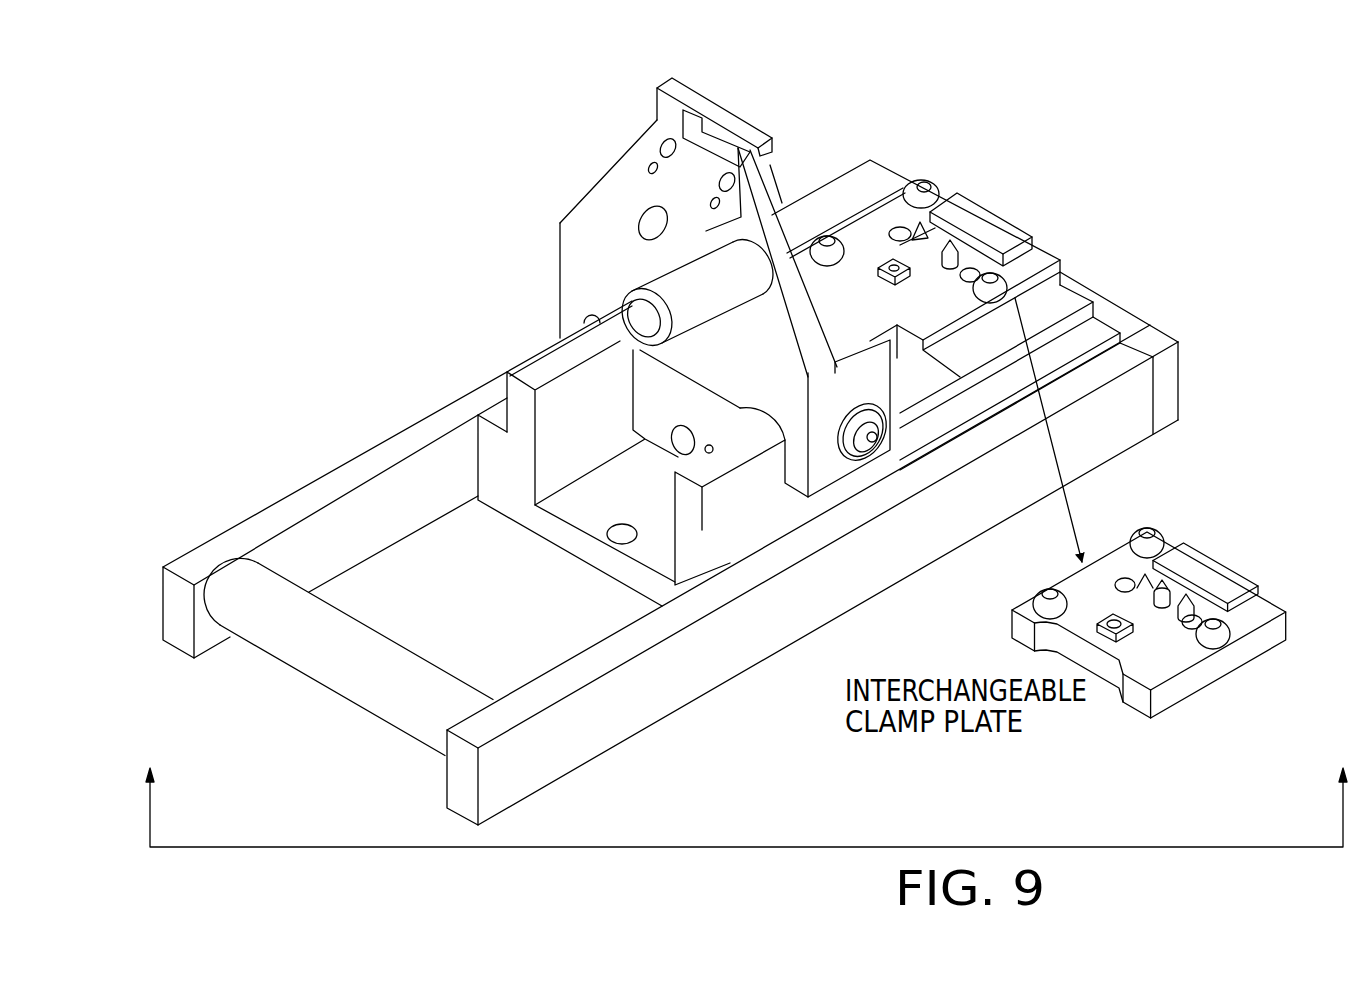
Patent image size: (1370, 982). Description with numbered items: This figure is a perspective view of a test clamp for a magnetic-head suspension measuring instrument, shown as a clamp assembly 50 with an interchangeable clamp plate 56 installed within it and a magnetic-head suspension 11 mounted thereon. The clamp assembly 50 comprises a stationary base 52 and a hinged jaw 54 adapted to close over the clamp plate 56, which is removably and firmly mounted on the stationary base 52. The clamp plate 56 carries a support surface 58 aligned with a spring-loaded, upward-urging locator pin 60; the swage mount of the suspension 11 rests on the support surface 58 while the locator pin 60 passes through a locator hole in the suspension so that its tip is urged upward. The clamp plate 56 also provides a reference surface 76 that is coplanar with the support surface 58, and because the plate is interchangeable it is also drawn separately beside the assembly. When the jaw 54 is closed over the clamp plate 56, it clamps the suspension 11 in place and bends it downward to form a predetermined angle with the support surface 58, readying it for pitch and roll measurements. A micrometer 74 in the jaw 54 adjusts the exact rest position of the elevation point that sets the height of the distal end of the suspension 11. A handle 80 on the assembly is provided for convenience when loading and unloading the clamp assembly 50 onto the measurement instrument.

The clamp assembly 50 is at (856, 118).
The magnetic-head suspension 11 is at (903, 242).
The stationary base 52 is at (452, 392).
The hinged jaw 54 is at (618, 168).
The clamp plate 56 is at (1030, 262).
The support surface 58 is at (1110, 624).
The locator pin 60 is at (1162, 588).
The micrometer 74 is at (667, 280).
The reference surface 76 is at (972, 215).
The handle 80 is at (373, 685).